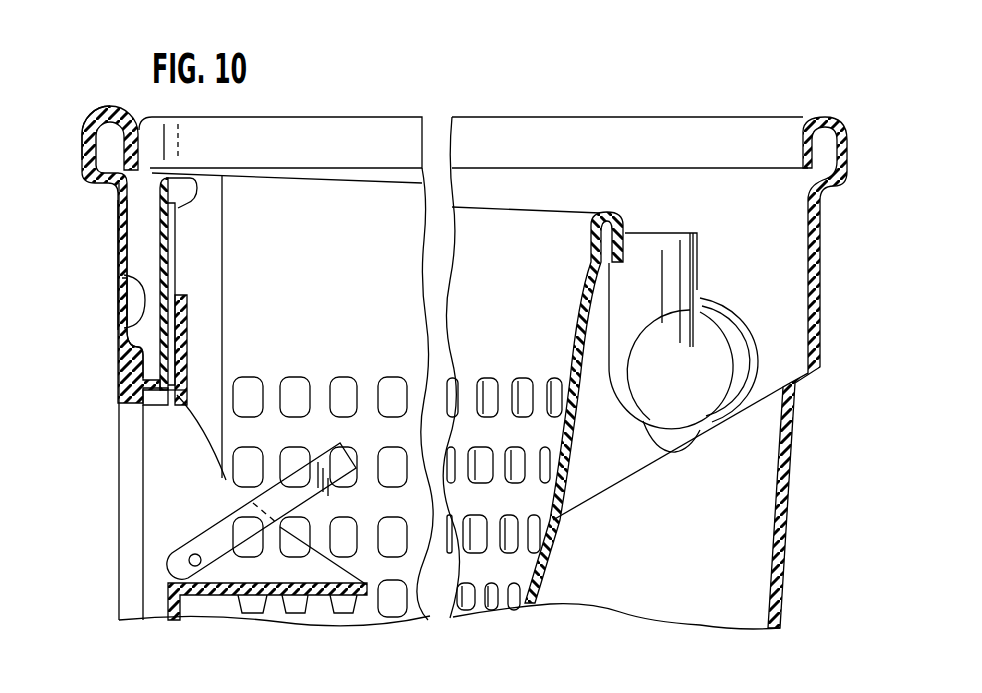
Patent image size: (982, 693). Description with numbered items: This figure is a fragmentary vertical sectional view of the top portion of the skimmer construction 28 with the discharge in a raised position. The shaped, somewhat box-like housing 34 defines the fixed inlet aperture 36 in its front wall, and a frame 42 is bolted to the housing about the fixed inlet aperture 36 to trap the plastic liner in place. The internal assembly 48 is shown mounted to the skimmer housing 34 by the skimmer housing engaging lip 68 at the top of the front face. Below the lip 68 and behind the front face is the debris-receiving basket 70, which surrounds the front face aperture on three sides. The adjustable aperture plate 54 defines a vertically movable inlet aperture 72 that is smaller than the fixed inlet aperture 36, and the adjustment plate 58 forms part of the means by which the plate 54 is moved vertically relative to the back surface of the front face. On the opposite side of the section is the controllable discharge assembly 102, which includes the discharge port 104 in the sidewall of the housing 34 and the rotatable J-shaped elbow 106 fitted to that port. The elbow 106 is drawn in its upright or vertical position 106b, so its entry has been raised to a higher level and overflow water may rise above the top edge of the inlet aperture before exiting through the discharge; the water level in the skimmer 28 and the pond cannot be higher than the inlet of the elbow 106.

The skimmer construction 28 is at (117, 94).
The skimmer housing engaging lip 68 is at (82, 149).
The adjustable aperture plate 54 is at (160, 190).
The housing 34 is at (118, 230).
The fixed inlet aperture 36 is at (120, 276).
The frame 42 is at (130, 350).
The adjustment plate 58 is at (170, 402).
The movable inlet aperture 72 is at (175, 414).
The internal assembly 48 is at (340, 176).
The debris-receiving basket 70 is at (518, 212).
The substantially vertical position of the elbow 106b is at (657, 232).
The discharge assembly 102 is at (724, 279).
The J shaped elbow 106 is at (738, 257).
The discharge port 104 is at (722, 366).